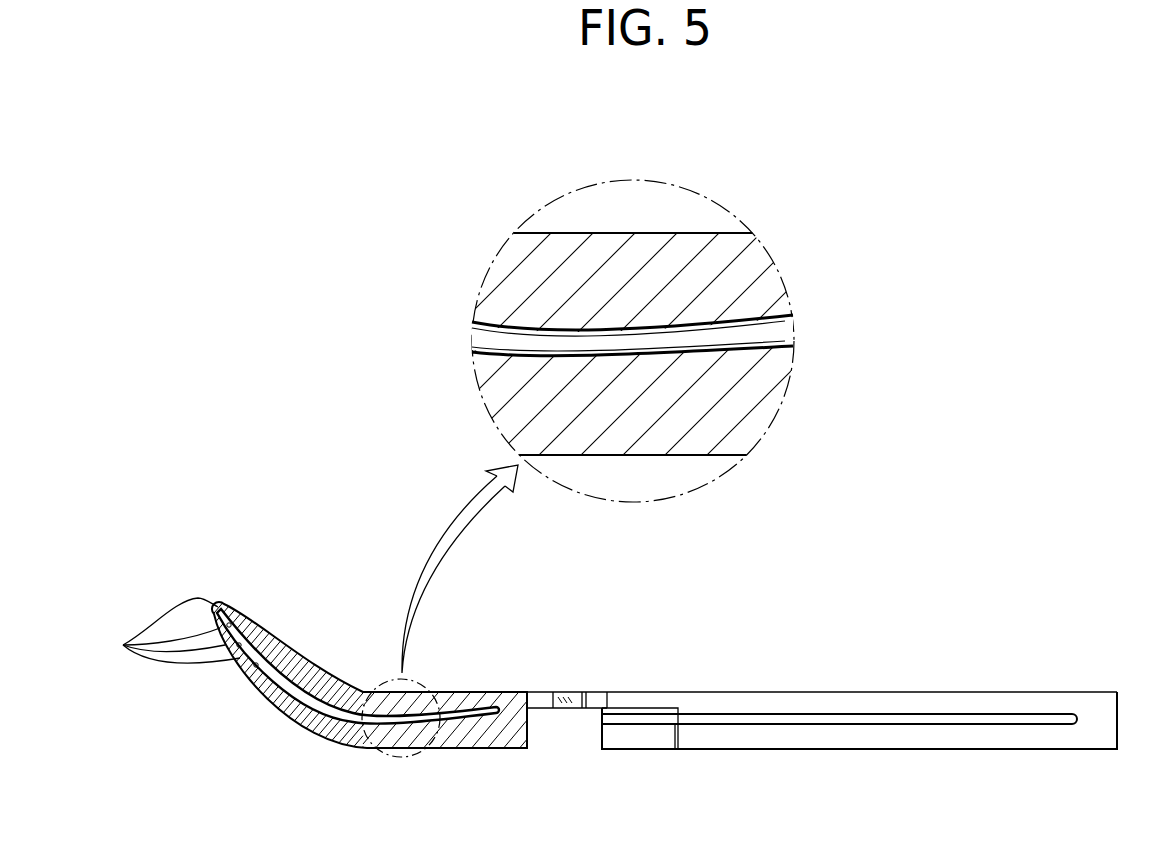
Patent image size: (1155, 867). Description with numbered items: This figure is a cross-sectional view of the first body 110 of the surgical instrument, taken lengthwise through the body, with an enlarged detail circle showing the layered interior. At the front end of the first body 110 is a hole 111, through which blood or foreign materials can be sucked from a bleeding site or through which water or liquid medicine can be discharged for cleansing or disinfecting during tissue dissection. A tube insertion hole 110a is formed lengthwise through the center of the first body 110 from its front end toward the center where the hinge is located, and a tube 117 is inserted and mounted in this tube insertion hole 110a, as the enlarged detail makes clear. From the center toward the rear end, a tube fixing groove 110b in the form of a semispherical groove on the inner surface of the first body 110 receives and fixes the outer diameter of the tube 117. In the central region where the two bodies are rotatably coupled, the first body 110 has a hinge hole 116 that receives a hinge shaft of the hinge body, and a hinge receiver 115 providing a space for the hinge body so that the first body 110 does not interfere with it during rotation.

The first body 110 is at (675, 467).
The tube insertion hole 110a is at (723, 315).
The tube fixing groove 110b is at (663, 720).
The hole 111 is at (307, 611).
The hinge receiver 115 is at (560, 728).
The hinge hole 116 is at (568, 697).
The tube 117 is at (750, 328).